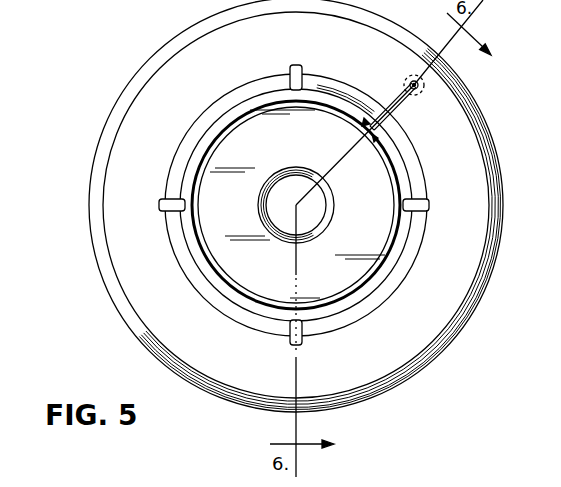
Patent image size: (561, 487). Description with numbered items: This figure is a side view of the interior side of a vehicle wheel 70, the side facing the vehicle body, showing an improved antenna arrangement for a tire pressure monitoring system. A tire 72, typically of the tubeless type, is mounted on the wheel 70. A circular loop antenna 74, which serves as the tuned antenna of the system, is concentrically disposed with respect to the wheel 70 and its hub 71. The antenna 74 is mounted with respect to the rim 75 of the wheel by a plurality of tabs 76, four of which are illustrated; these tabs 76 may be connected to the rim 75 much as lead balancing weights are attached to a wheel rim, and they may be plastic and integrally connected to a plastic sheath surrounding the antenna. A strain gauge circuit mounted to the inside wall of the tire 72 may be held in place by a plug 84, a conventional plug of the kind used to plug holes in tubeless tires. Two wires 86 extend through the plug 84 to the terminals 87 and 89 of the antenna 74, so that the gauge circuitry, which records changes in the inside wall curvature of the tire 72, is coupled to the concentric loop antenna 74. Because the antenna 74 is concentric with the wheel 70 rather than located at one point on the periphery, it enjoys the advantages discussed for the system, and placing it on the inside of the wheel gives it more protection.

The wheel 70 is at (355, 272).
The hub 71 is at (277, 207).
The tire 72 is at (452, 277).
The loop antenna 74 is at (197, 257).
The rim 75 is at (210, 105).
The tabs 76 is at (296, 65).
The plug 84 is at (409, 76).
The wires 86 is at (396, 100).
The terminal 87 is at (362, 125).
The terminal 89 is at (372, 140).